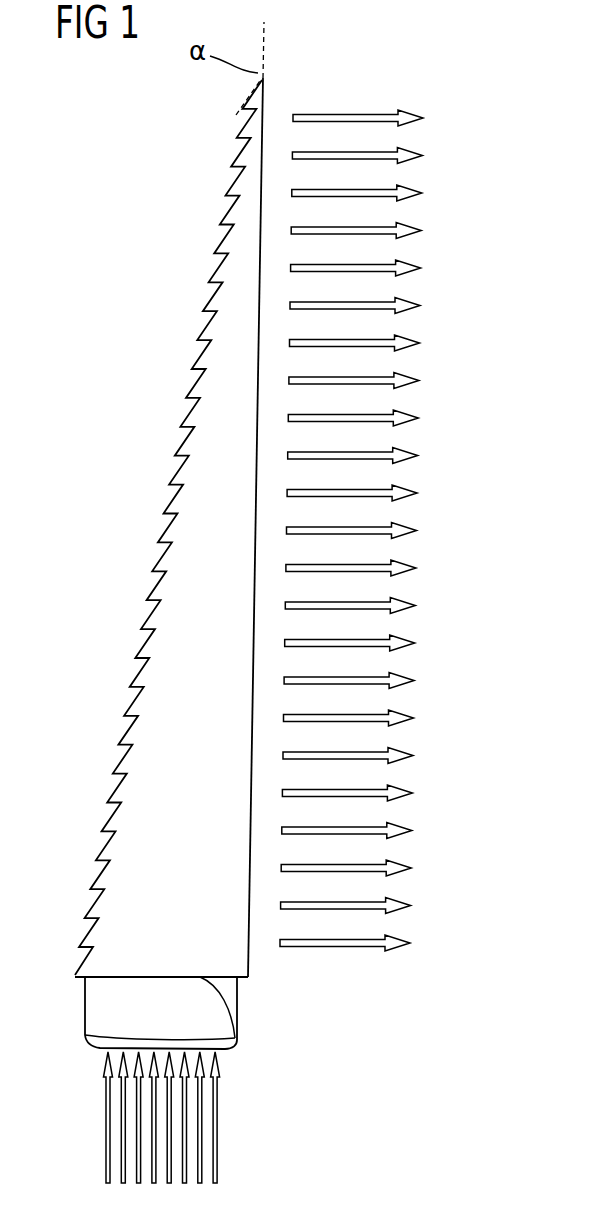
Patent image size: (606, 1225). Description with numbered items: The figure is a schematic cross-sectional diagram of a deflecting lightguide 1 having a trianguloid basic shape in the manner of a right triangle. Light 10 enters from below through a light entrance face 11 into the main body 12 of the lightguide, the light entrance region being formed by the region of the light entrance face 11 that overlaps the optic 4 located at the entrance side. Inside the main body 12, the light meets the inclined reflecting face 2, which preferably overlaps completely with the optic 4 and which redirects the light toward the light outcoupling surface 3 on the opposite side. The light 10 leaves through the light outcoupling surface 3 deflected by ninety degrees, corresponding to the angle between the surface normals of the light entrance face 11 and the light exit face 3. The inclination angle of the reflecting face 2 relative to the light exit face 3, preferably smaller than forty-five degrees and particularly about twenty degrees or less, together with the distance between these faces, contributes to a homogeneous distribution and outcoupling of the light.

The deflecting lightguide 1 is at (185, 152).
The reflecting face 2 is at (163, 503).
The light outcoupling surface 3 is at (251, 928).
The optic 4 is at (97, 1008).
The light 10 is at (412, 789).
The light entrance face 11 is at (234, 1044).
The main body 12 is at (207, 412).